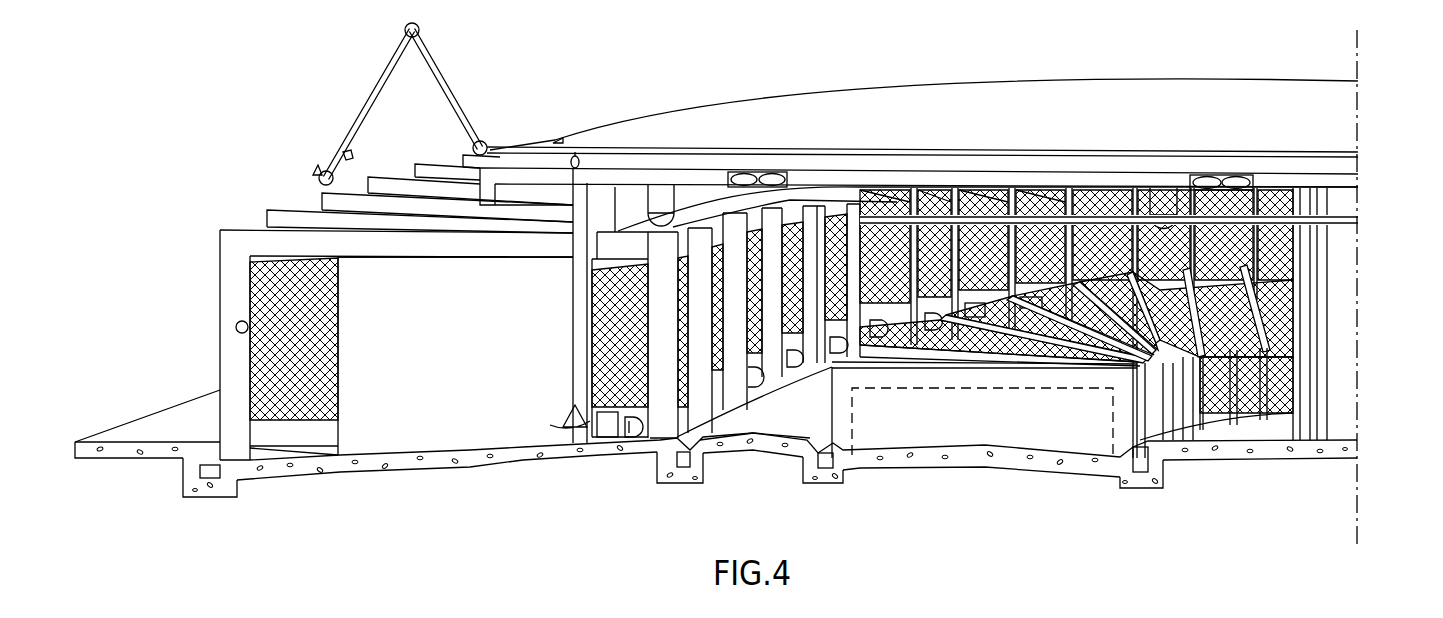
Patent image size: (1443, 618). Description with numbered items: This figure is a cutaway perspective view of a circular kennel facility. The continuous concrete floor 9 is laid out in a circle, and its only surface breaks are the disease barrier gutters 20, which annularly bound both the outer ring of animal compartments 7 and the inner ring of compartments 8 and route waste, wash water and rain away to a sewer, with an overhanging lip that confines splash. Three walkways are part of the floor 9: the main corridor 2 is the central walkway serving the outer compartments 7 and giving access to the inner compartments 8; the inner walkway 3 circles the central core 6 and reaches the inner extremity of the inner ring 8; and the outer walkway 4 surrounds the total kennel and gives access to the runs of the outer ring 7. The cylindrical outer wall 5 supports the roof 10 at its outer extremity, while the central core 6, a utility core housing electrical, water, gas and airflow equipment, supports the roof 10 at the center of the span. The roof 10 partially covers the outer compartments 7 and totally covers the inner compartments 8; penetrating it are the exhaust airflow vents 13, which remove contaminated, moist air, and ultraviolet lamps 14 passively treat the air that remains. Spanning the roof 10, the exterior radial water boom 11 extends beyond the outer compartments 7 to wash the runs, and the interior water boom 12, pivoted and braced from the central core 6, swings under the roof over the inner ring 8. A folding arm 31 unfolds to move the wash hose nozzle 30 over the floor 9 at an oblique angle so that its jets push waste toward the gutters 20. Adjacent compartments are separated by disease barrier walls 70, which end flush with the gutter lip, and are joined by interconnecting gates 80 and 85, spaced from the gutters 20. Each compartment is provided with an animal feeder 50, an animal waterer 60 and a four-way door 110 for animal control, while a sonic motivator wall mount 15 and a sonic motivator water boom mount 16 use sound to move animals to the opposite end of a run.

The main corridor 2 is at (755, 427).
The inner walkway 3 is at (1216, 394).
The outer walkway 4 is at (147, 416).
The outer wall 5 is at (396, 206).
The central core 6 is at (1360, 353).
The outer ring of animal compartments 7 is at (752, 388).
The inner ring of compartments 8 is at (1230, 420).
The floor 9 is at (523, 445).
The roof 10 is at (1050, 80).
The exterior radial water boom 11 is at (1023, 152).
The interior water boom 12 is at (1297, 220).
The exhaust airflow vents 13 is at (745, 173).
The ultraviolet lamps 14 is at (657, 211).
The sonic motivator wall mount 15 is at (236, 330).
The sonic motivator water boom mount 16 is at (350, 157).
The disease barrier gutters 20 is at (205, 497).
The wash hose nozzle 30 is at (313, 171).
The folding arm 31 is at (443, 80).
The animal feeder 50 is at (633, 437).
The animal waterer 60 is at (603, 437).
The disease barrier walls 70 is at (737, 357).
The interconnecting gate 80 is at (250, 312).
The interconnecting gate 85 is at (592, 305).
The four-way door 110 is at (563, 411).